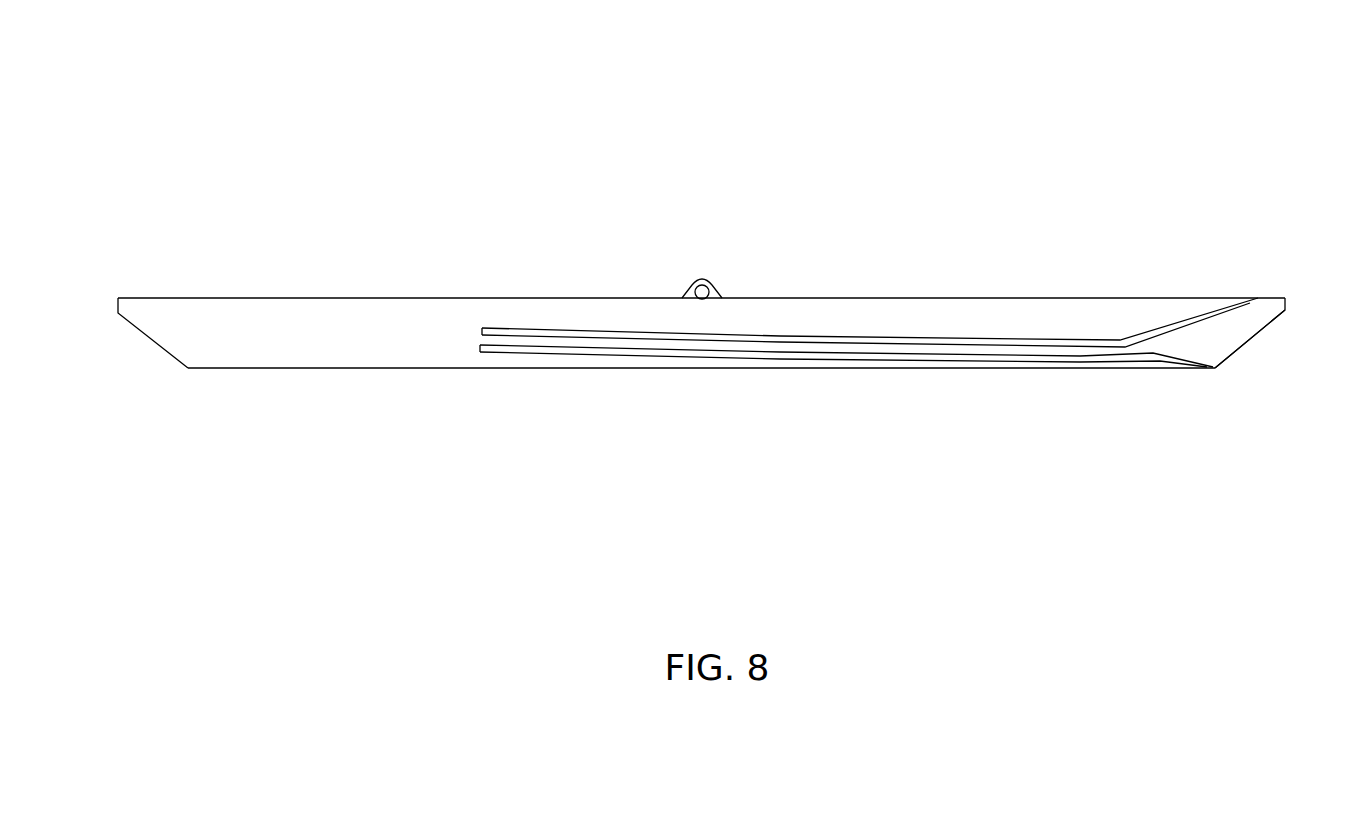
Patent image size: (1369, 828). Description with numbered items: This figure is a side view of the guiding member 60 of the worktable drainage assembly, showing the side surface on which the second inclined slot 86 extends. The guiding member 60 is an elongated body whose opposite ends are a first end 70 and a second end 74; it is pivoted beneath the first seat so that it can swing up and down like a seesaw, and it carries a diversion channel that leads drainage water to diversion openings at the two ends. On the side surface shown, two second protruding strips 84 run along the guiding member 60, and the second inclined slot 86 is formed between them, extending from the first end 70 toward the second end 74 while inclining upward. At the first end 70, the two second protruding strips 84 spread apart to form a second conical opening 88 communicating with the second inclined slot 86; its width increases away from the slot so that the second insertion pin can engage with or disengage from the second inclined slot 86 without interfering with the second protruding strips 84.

The guiding member 60 is at (882, 145).
The first end 70 is at (1286, 307).
The second end 74 is at (118, 298).
The second protruding strips 84 is at (583, 331).
The second inclined slot 86 is at (748, 345).
The second conical opening 88 is at (1218, 344).